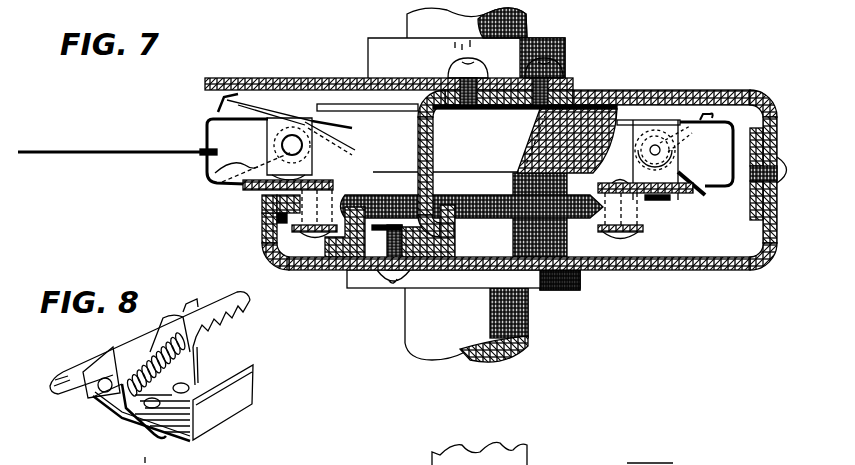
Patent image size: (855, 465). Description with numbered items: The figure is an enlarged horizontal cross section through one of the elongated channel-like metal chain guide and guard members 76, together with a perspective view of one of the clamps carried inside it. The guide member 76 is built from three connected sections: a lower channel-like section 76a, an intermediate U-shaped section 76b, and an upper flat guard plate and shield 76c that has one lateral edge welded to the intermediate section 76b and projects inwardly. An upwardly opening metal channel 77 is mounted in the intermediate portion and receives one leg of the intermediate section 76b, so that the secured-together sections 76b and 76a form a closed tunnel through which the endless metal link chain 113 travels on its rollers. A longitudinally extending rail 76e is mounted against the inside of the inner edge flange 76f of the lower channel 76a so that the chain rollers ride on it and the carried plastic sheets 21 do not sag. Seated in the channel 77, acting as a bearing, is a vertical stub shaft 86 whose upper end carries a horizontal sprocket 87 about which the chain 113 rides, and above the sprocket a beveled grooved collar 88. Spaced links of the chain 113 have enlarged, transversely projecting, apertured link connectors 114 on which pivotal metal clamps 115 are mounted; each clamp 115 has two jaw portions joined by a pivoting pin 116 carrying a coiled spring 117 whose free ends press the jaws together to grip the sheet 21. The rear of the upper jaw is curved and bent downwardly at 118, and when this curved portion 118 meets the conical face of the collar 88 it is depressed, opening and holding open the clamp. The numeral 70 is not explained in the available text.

In FIG. 7, the plastic film or plastic sheets 21 is at (118, 149).
In FIG. 8, the drive unit 70 is at (345, 464).
In FIG. 7, the chain guide and guard member 76 is at (643, 270).
In FIG. 7, the lower channel section 76a is at (606, 271).
In FIG. 7, the intermediate U-shaped section 76b is at (658, 90).
In FIG. 7, the flat guard plate and shield 76c is at (309, 78).
In FIG. 7, the rail 76e is at (258, 233).
In FIG. 7, the inner edge flange 76f is at (258, 213).
In FIG. 7, the upwardly opening metal channel 77 is at (338, 271).
In FIG. 7, the vertical stub shaft 86 is at (428, 318).
In FIG. 7, the horizontal sprocket 87 is at (489, 221).
In FIG. 7, the beveled grooved collar 88 is at (588, 107).
In FIG. 8, the beveled grooved collar 88 is at (259, 457).
In FIG. 7, the endless metal link chain 113 is at (263, 247).
In FIG. 7, the link connector 114 is at (250, 198).
In FIG. 7, the pivotal metal clamp 115 is at (205, 176).
In FIG. 8, the pivotal metal clamp 115 is at (137, 418).
In FIG. 7, the pivoting pin 116 is at (290, 145).
In FIG. 8, the pivoting pin 116 is at (100, 394).
In FIG. 7, the coiled spring 117 is at (238, 190).
In FIG. 8, the coiled spring 117 is at (140, 358).
In FIG. 7, the curved downwardly bent clamp portion 118 is at (350, 128).
In FIG. 8, the curved downwardly bent clamp portion 118 is at (53, 387).